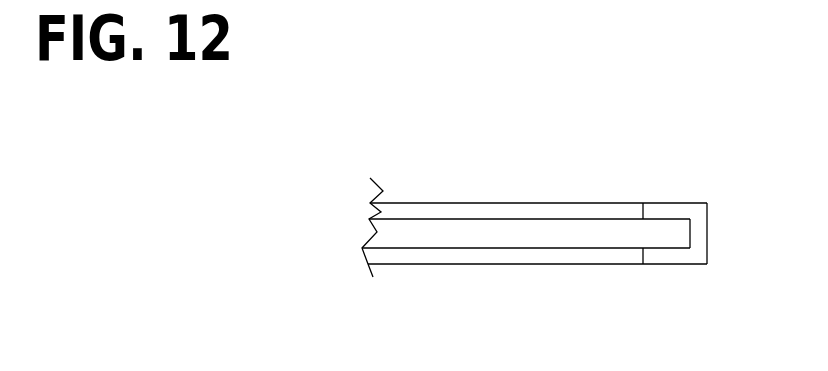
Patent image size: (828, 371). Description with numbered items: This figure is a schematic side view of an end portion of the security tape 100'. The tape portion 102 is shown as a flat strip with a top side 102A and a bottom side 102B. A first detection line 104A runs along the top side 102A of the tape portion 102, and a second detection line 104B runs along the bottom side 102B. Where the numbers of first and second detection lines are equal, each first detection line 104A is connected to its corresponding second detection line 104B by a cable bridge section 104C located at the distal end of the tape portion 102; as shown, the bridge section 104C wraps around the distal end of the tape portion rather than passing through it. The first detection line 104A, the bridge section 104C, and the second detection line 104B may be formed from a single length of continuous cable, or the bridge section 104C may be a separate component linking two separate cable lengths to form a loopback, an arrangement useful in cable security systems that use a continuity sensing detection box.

The security tape 100' is at (463, 188).
The tape portion 102 is at (675, 238).
The top side 102A is at (410, 217).
The bottom side 102B is at (408, 245).
The first detection line 104A is at (500, 210).
The second detection line 104B is at (584, 256).
The cable bridge section 104C is at (690, 212).